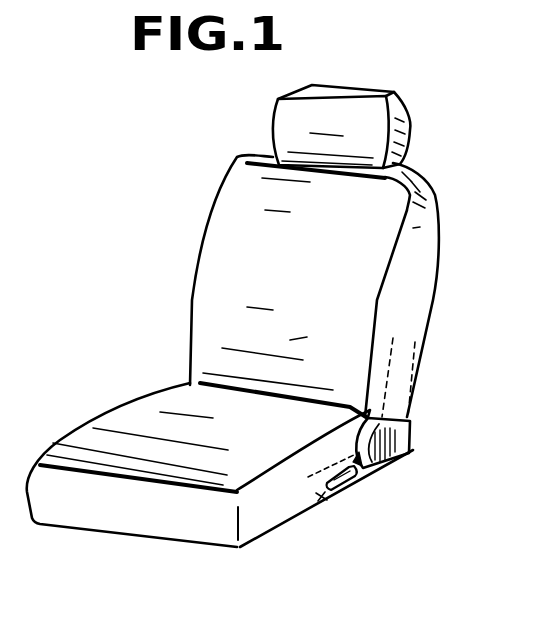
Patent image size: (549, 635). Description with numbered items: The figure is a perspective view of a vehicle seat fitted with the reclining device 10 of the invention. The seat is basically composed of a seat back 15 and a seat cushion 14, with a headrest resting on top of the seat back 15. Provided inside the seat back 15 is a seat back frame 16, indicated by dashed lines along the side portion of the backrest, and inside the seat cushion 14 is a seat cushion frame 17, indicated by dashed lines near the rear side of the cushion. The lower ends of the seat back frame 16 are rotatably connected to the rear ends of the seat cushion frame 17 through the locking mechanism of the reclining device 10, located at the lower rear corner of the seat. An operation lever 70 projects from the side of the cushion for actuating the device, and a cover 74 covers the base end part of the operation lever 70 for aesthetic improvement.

The reclining device 10 is at (433, 449).
The seat cushion 14 is at (280, 520).
The seat back 15 is at (436, 273).
The seat back frame 16 is at (407, 382).
The seat cushion frame 17 is at (322, 499).
The operation lever 70 is at (362, 480).
The cover 74 is at (397, 457).